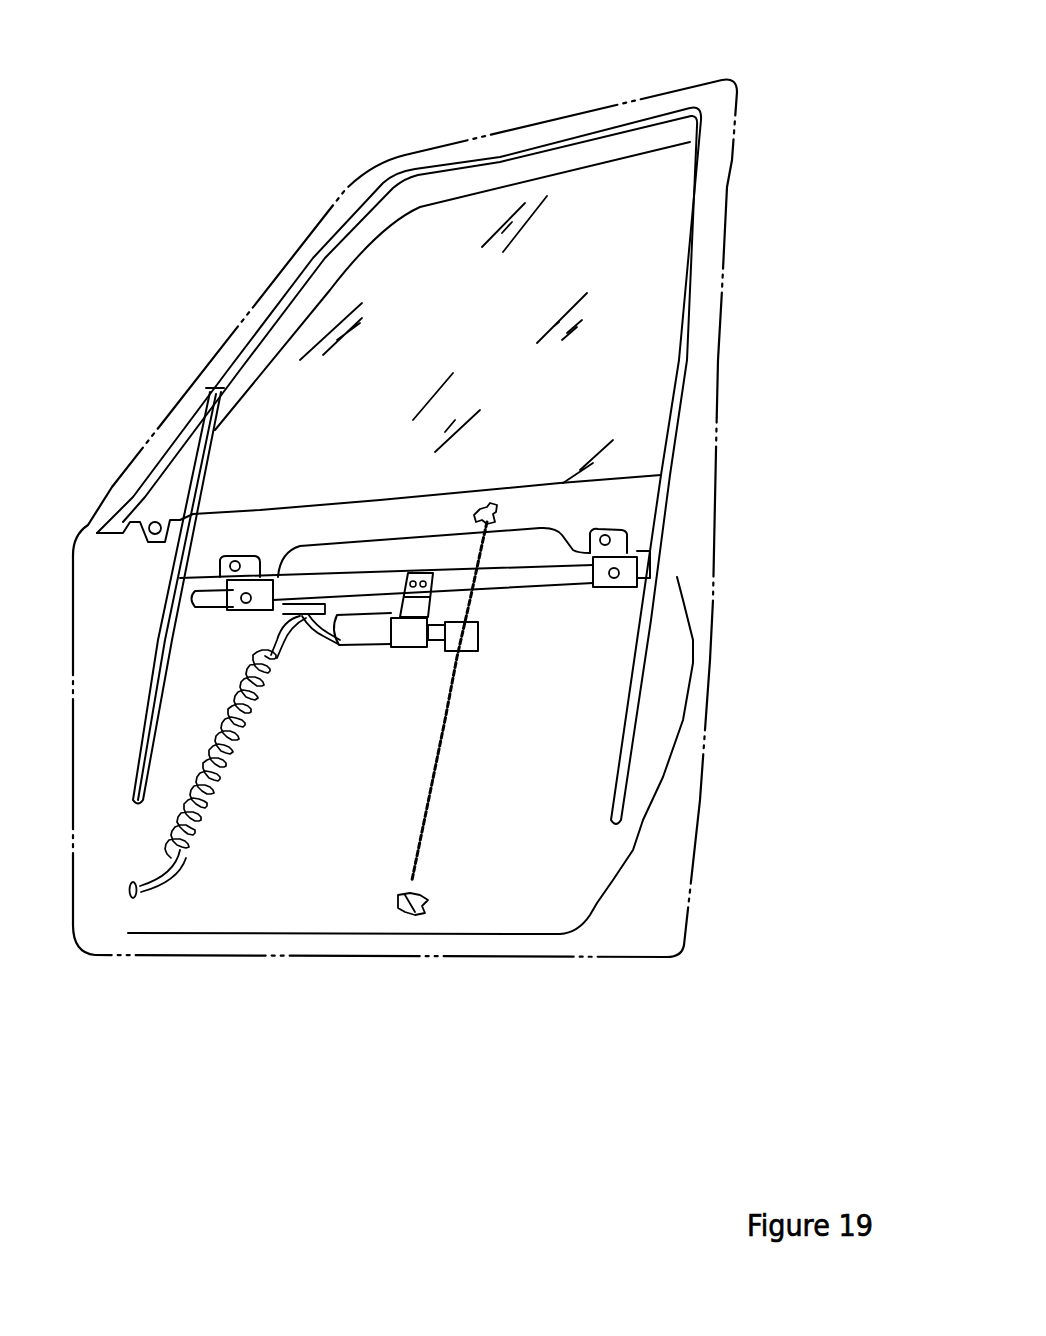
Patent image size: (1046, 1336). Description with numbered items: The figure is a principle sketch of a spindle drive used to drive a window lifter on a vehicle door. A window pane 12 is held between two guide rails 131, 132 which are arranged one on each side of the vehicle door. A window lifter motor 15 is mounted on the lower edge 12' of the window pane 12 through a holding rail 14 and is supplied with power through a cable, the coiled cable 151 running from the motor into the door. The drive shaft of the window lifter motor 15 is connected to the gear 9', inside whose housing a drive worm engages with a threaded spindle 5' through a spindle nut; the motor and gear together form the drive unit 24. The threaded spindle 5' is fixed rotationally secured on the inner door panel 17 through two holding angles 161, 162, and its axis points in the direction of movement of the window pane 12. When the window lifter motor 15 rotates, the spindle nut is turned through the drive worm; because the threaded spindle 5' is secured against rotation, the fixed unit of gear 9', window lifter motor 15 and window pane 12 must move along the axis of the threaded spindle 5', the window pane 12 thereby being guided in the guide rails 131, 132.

The window pane 12 is at (548, 307).
The lower edge of the window pane 12' is at (574, 484).
The guide rail 131 is at (196, 475).
The guide rail 132 is at (681, 345).
The holding rail 14 is at (527, 578).
The window lifter motor 15 is at (404, 632).
The coiled supply cable 151 is at (207, 813).
The holding angle 161 is at (423, 903).
The holding angle 162 is at (484, 510).
The door inner panel 17 is at (505, 912).
The drive unit 24 is at (441, 560).
The threaded spindle 5' is at (626, 701).
The gear housing 9' is at (636, 648).